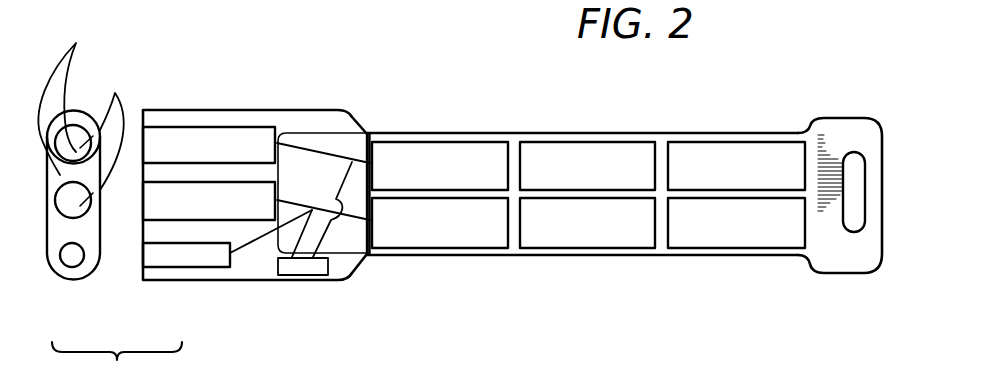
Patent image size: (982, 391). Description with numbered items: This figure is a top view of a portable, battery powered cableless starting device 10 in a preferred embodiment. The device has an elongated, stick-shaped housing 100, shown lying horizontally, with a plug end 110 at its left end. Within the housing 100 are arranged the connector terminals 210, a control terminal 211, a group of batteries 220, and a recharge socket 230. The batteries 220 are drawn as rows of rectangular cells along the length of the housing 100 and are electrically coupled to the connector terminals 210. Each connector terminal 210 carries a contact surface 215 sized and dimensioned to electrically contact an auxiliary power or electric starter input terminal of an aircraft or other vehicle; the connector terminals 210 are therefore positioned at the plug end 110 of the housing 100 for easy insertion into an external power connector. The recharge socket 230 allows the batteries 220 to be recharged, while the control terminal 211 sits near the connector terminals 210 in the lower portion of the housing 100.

The battery powered cableless starting device 10 is at (725, 73).
The housing 100 is at (512, 133).
The plug end 110 is at (160, 110).
The connector terminals 210 is at (227, 200).
The control terminal 211 is at (72, 255).
The contact surface 215 is at (76, 99).
The batteries 220 is at (418, 163).
The recharge socket 230 is at (303, 270).